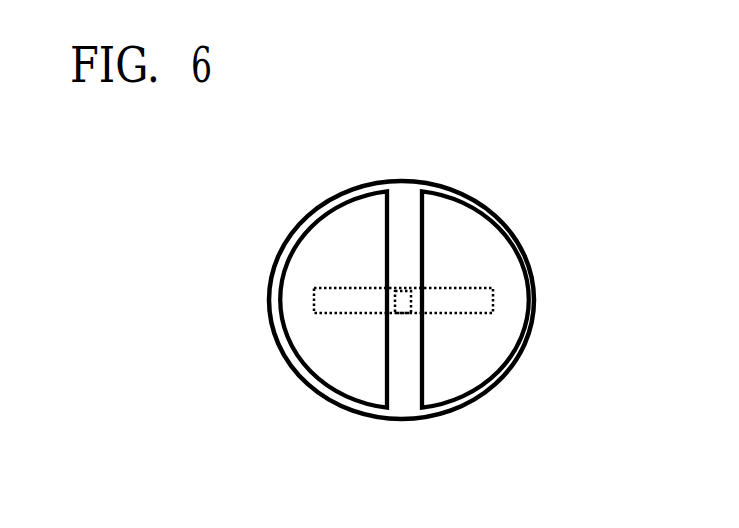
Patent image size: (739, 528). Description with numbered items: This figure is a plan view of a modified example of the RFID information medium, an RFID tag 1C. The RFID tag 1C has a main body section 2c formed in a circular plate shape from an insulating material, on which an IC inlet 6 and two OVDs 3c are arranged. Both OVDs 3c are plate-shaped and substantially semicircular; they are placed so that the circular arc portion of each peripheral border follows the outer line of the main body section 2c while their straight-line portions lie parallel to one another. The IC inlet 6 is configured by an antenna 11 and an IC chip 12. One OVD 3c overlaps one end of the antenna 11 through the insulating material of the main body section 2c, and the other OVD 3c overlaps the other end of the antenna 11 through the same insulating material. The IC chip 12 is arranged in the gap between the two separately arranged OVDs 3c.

The RFID tag 1C is at (403, 300).
The main body section 2c is at (411, 179).
The OVD 3c is at (320, 238).
The IC inlet 6 is at (393, 404).
The antenna 11 is at (366, 312).
The IC chip 12 is at (403, 306).